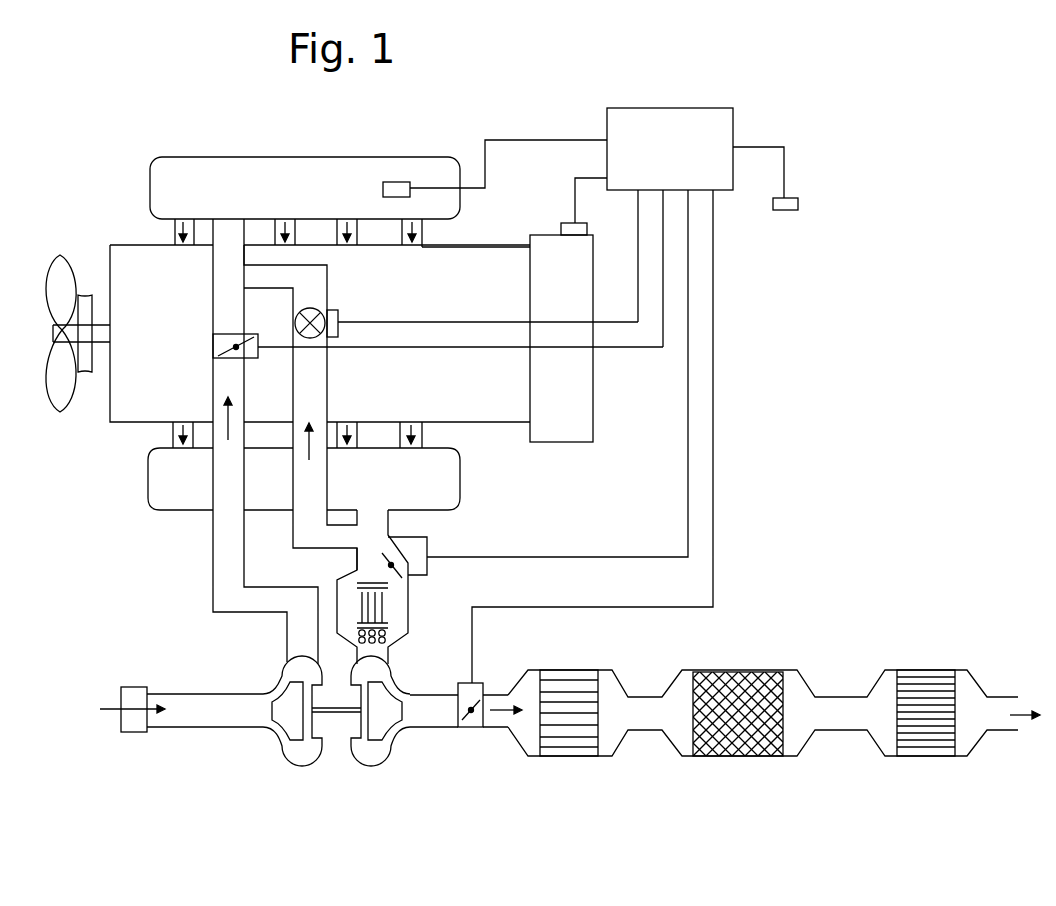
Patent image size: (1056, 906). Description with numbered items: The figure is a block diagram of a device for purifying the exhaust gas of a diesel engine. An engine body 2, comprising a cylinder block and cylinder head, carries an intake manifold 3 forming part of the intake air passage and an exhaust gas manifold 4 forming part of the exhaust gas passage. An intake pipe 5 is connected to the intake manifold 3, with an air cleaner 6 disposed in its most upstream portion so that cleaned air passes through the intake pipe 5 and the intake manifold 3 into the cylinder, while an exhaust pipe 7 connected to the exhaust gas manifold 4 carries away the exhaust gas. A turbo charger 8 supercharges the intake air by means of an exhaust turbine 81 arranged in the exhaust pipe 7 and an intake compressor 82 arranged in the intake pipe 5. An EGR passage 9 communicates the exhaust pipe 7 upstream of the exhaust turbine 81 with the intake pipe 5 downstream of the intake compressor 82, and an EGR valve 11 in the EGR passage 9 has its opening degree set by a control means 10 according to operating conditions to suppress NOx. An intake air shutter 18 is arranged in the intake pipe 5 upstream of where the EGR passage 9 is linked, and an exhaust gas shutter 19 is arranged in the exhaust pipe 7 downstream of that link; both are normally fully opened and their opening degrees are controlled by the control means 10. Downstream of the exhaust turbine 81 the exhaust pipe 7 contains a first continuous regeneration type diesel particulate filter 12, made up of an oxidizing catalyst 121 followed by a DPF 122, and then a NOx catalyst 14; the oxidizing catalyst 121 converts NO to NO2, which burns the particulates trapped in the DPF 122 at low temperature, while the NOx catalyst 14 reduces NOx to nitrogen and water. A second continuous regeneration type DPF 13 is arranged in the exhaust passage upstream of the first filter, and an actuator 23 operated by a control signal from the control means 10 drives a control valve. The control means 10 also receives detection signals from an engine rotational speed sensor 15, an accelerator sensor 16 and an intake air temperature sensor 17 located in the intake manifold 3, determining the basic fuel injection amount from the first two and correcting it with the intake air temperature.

The engine body 2 is at (108, 407).
The intake manifold 3 is at (148, 177).
The exhaust gas manifold 4 is at (163, 512).
The intake pipe 5 is at (215, 386).
The air cleaner 6 is at (135, 732).
The exhaust pipe 7 is at (388, 657).
The turbo charger 8 is at (337, 750).
The EGR passage 9 is at (330, 392).
The control means 10 is at (733, 177).
The EGR valve 11 is at (338, 312).
The first continuous regeneration type diesel particulate filter 12 is at (800, 815).
The second continuous regeneration type DPF 13 is at (382, 605).
The NOx catalyst 14 is at (935, 757).
The engine rotational speed sensor 15 is at (562, 228).
The accelerator sensor 16 is at (788, 210).
The intake air temperature sensor 17 is at (383, 187).
The intake air shutter 18 is at (212, 343).
The exhaust gas shutter 19 is at (468, 728).
The actuator 23 is at (427, 540).
The exhaust turbine 81 is at (392, 745).
The intake compressor 82 is at (273, 738).
The oxidizing catalyst 121 is at (583, 755).
The DPF 122 is at (765, 757).